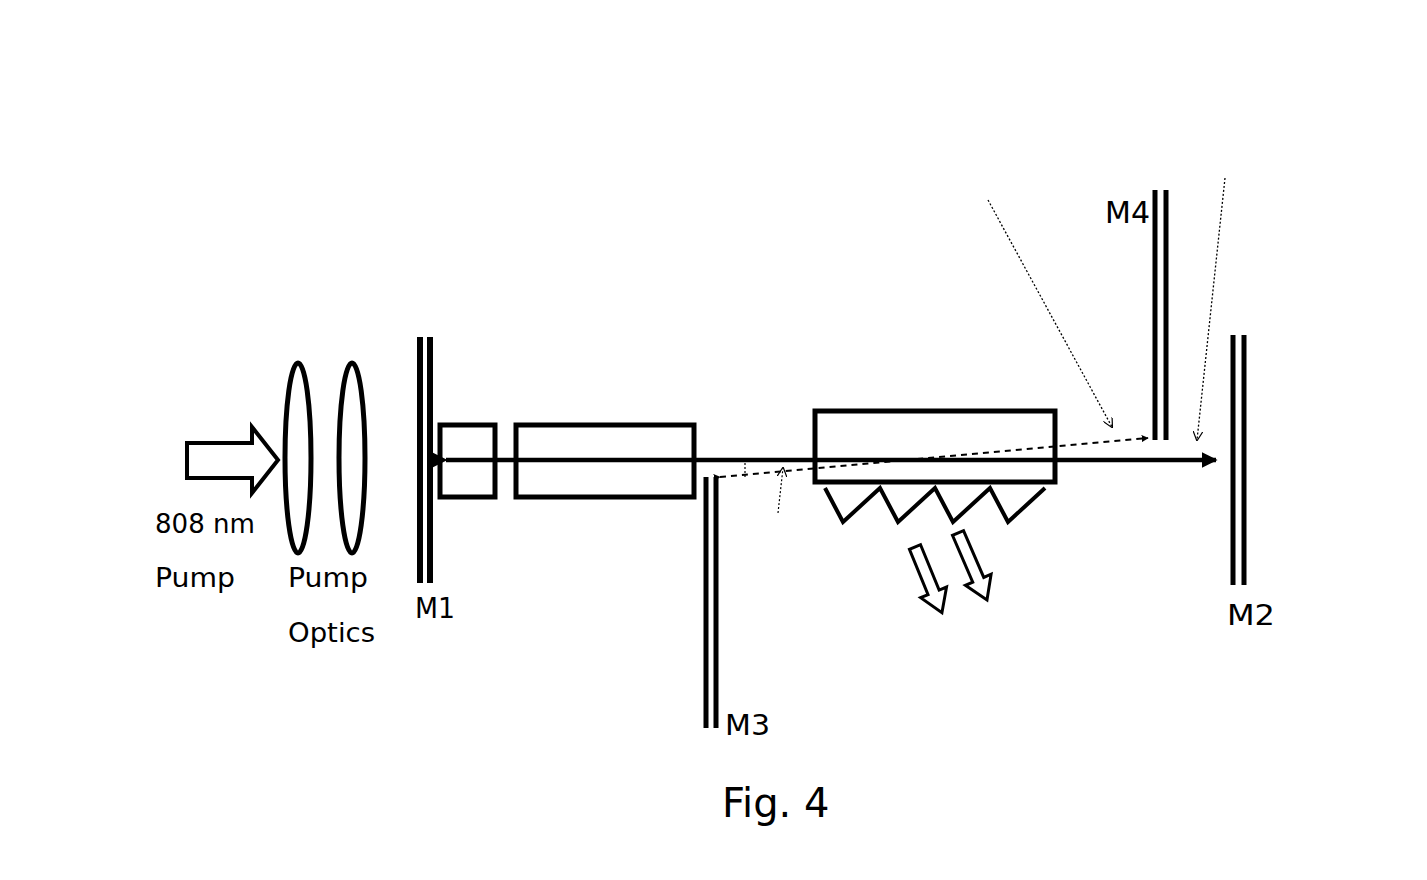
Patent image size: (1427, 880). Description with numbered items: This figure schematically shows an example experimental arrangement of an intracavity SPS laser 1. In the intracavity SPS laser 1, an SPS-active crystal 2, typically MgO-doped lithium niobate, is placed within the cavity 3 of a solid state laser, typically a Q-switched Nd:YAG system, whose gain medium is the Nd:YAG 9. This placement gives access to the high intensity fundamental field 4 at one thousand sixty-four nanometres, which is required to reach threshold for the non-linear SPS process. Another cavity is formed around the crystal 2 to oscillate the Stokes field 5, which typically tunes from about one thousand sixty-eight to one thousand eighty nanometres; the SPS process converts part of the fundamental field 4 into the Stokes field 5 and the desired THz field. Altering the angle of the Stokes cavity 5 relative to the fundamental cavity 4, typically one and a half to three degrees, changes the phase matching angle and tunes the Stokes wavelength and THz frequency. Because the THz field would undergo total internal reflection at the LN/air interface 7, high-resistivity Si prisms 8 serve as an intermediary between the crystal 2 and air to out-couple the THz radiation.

The intracavity SPS laser 1 is at (200, 180).
The SPS-active crystal 2 is at (828, 405).
The cavity 3 is at (510, 717).
The fundamental field 4 is at (1152, 465).
The Stokes field 5 is at (1097, 432).
The LN/air interface 7 is at (1062, 485).
The Si prisms 8 is at (893, 518).
The Nd:YAG gain medium 9 is at (495, 377).